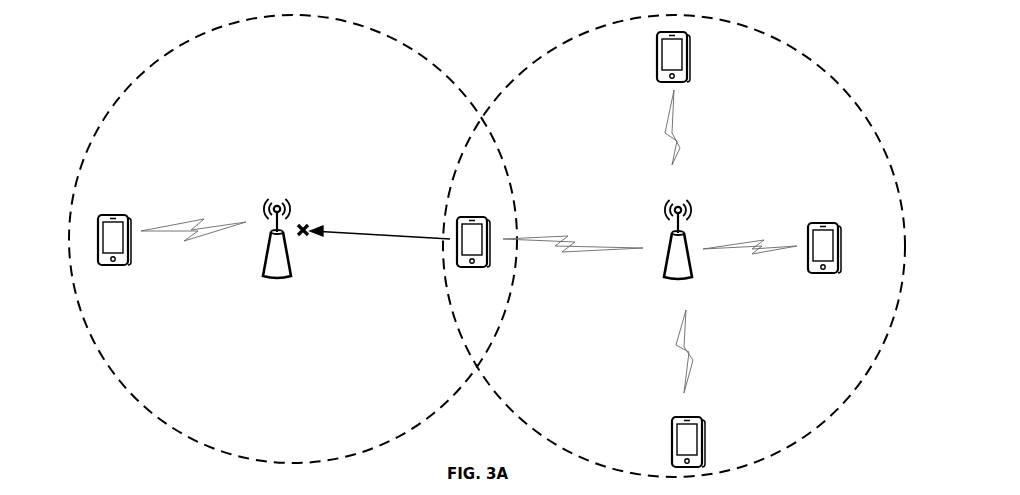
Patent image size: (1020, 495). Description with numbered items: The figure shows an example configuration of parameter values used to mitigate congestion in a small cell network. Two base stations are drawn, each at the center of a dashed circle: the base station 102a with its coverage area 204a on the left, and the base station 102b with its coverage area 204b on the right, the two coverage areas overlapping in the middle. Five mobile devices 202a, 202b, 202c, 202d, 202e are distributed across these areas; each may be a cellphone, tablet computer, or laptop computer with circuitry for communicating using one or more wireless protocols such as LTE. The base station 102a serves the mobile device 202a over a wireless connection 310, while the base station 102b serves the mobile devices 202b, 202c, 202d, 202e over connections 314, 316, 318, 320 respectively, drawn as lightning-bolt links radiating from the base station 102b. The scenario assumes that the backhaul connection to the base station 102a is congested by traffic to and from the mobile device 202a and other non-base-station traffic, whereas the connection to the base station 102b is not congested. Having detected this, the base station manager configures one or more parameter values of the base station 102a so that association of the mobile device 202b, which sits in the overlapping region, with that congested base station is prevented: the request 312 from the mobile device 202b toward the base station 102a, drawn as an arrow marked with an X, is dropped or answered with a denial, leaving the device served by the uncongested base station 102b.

The coverage area 204a is at (418, 39).
The coverage area 204b is at (805, 45).
The mobile device 202a is at (122, 265).
The mobile device 202b is at (480, 267).
The mobile device 202c is at (704, 428).
The mobile device 202d is at (841, 236).
The mobile device 202e is at (690, 43).
The base station 102a is at (265, 277).
The base station 102b is at (666, 277).
The wireless connection 310 is at (203, 220).
The request 312 is at (367, 234).
The connection 314 is at (568, 237).
The connection 316 is at (690, 348).
The connection 318 is at (770, 230).
The connection 320 is at (681, 139).